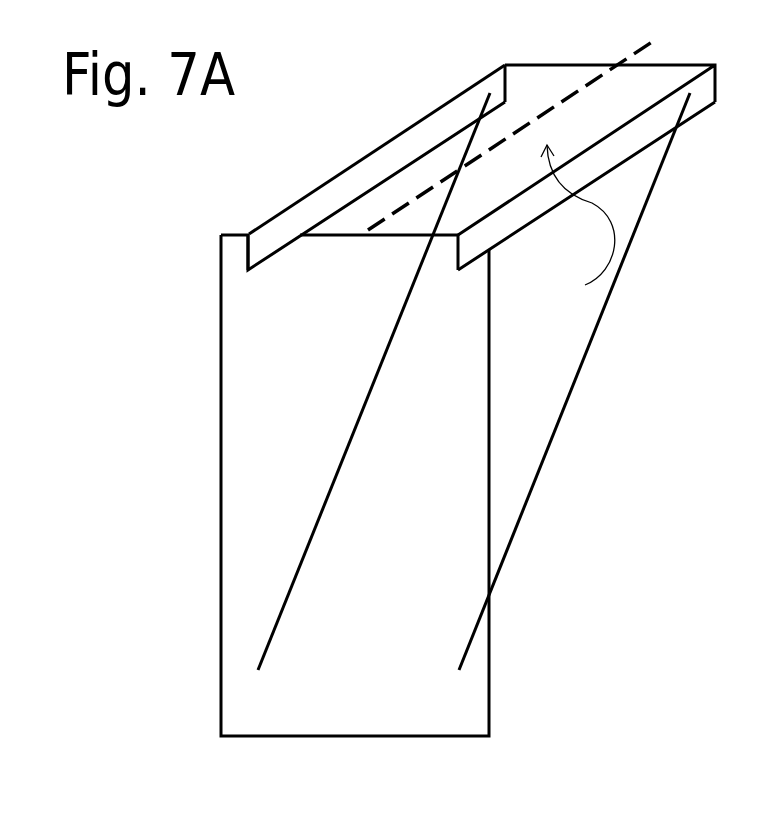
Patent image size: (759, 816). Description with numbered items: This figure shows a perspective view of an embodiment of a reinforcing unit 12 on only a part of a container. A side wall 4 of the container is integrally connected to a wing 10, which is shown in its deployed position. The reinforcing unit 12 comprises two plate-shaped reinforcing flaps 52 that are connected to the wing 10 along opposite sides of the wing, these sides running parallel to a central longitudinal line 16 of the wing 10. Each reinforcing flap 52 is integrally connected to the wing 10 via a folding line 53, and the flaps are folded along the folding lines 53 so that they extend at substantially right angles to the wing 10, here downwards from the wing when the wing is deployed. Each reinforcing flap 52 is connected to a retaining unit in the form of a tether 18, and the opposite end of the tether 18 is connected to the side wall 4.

The side wall 4 is at (252, 383).
The wing 10 is at (578, 224).
The reinforcing unit 12 is at (409, 167).
The central longitudinal line 16 is at (413, 196).
The tether 18 is at (303, 552).
The reinforcing flap 52 is at (258, 253).
The folding line 53 is at (312, 192).